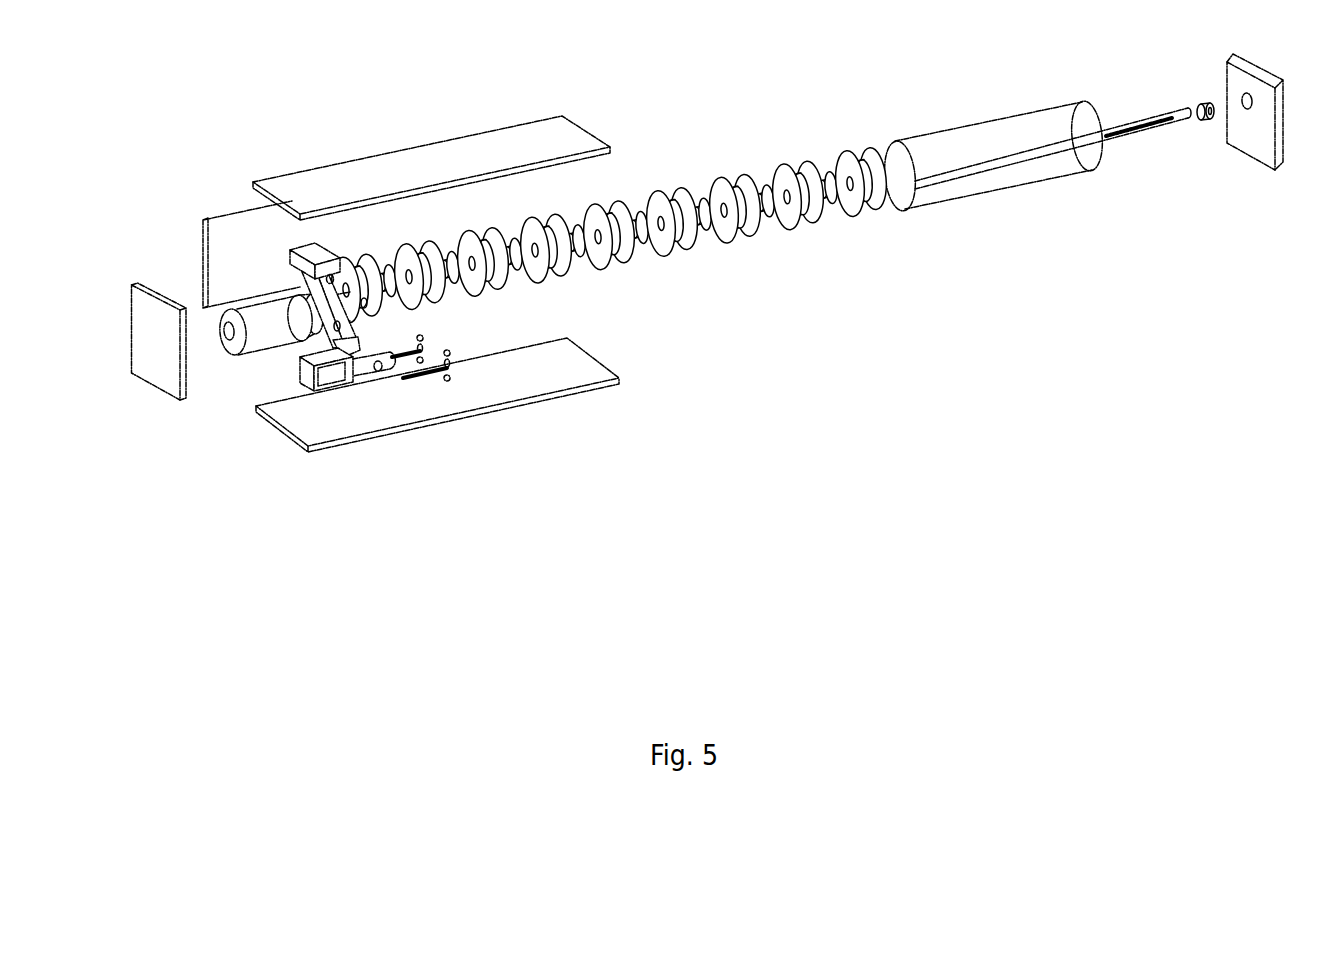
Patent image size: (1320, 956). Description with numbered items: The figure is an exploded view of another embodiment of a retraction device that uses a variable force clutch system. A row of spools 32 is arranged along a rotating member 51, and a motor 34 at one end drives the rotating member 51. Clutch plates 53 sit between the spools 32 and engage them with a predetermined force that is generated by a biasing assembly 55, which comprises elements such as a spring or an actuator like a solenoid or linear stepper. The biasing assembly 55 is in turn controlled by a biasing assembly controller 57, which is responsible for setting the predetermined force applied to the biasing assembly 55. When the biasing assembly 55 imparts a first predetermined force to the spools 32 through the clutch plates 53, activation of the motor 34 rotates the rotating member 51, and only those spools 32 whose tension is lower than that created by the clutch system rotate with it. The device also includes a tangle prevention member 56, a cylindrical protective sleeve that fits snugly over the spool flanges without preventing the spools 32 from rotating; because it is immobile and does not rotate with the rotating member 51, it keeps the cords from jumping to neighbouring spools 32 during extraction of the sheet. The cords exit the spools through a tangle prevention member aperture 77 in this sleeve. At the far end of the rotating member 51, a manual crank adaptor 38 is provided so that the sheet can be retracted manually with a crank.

The spools 32 is at (842, 148).
The motor 34 is at (265, 342).
The manual crank adaptor 38 is at (1203, 120).
The rotating member 51 is at (1163, 119).
The clutch plates 53 is at (643, 250).
The biasing assembly 55 is at (335, 324).
The tangle prevention member 56 is at (993, 148).
The biasing assembly controller 57 is at (288, 256).
The tangle prevention member aperture 77 is at (1053, 157).